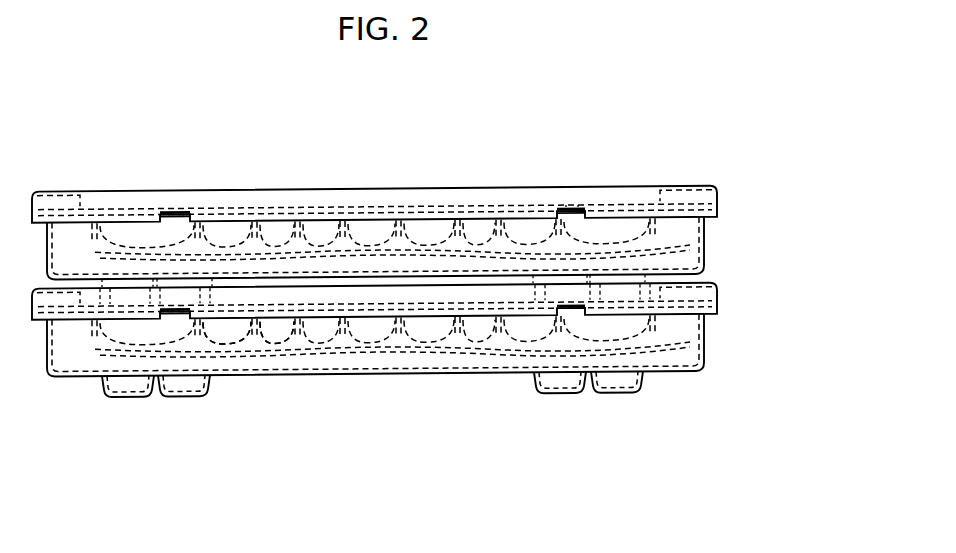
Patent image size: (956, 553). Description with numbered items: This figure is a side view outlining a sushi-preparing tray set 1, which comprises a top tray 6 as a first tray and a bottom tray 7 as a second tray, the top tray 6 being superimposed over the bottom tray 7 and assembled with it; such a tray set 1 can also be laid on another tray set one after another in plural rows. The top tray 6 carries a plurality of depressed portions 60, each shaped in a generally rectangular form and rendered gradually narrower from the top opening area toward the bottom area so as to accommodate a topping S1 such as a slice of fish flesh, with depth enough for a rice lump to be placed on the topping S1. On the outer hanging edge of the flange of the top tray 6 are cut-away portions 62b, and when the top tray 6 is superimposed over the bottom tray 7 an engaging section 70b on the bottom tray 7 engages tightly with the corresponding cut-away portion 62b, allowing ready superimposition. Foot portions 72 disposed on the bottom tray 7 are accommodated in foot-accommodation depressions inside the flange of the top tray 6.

The tray set 1 is at (806, 152).
The top tray 6 is at (693, 182).
The bottom tray 7 is at (713, 245).
The depressed portion 60 is at (172, 236).
The cut-away portion 62b is at (560, 212).
The engaging section 70b is at (573, 210).
The foot portion 72 is at (125, 400).
The topping S1 is at (137, 241).